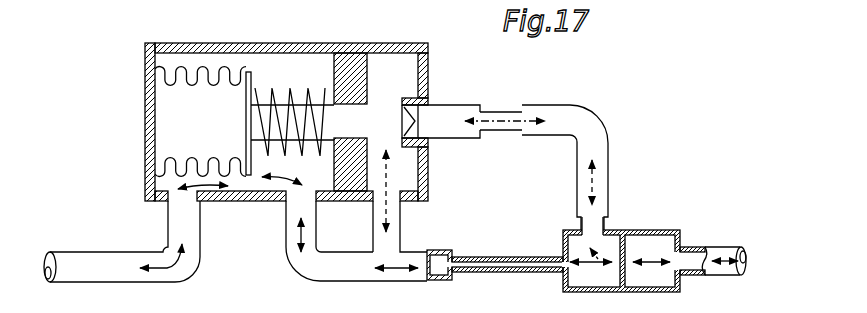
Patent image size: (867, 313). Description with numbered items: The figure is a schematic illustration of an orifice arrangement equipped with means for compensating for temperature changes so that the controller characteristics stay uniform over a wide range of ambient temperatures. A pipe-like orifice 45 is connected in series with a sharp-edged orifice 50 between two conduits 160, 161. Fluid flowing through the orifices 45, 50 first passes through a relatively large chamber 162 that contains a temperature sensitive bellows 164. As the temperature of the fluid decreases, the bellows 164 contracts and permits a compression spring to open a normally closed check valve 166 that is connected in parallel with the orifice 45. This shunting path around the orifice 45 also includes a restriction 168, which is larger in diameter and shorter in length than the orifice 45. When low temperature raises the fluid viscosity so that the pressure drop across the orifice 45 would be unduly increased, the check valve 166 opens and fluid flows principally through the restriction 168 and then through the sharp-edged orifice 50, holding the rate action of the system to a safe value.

The temperature sensitive bellows 164 is at (168, 160).
The chamber 162 is at (294, 95).
The check valve 166 is at (403, 124).
The restriction 168 is at (497, 117).
The conduit 160 is at (400, 276).
The pipe-like orifice 45 is at (488, 258).
The sharp-edged orifice 50 is at (626, 262).
The conduit 161 is at (727, 252).